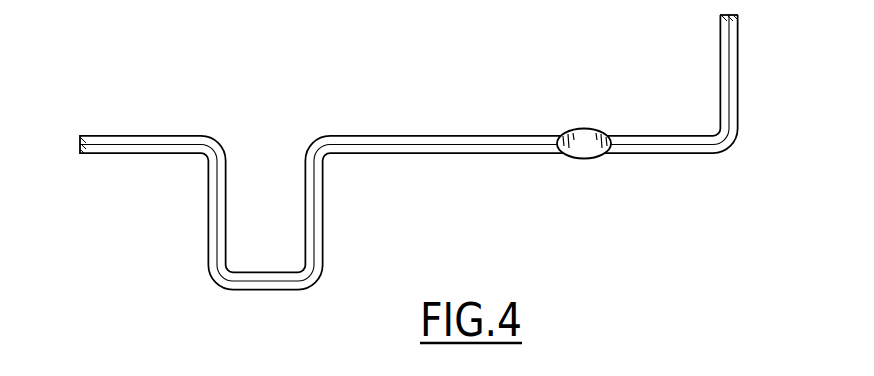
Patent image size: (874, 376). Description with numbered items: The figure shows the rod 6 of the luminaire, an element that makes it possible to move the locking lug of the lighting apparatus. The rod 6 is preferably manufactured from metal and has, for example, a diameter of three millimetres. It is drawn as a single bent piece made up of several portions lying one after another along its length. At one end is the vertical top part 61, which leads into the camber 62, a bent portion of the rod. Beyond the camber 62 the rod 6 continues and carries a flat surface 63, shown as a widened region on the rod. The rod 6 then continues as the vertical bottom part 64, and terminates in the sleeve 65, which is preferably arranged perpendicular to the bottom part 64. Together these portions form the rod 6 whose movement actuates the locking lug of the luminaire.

The rod 6 is at (410, 131).
The vertical top part 61 is at (136, 144).
The camber 62 is at (259, 290).
The flat surface 63 is at (583, 158).
The vertical bottom part 64 is at (672, 147).
The sleeve 65 is at (740, 36).